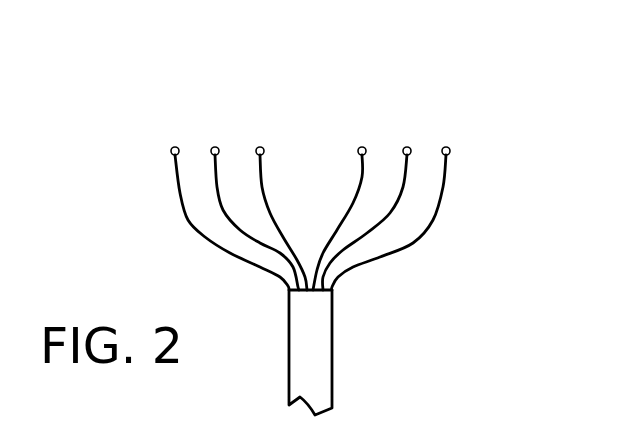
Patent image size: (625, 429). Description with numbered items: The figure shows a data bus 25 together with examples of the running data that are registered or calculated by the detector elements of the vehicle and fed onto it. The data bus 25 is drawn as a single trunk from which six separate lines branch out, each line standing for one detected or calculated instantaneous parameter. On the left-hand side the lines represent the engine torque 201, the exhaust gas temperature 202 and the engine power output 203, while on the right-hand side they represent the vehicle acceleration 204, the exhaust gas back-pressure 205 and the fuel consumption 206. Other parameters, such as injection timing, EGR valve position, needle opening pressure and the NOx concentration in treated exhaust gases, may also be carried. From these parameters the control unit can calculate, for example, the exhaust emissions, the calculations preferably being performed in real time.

The data bus 25 is at (332, 337).
The engine torque 201 is at (172, 147).
The exhaust gas temperature 202 is at (212, 147).
The engine power output 203 is at (257, 147).
The vehicle acceleration 204 is at (365, 147).
The exhaust gas back-pressure 205 is at (410, 147).
The fuel consumption 206 is at (449, 147).